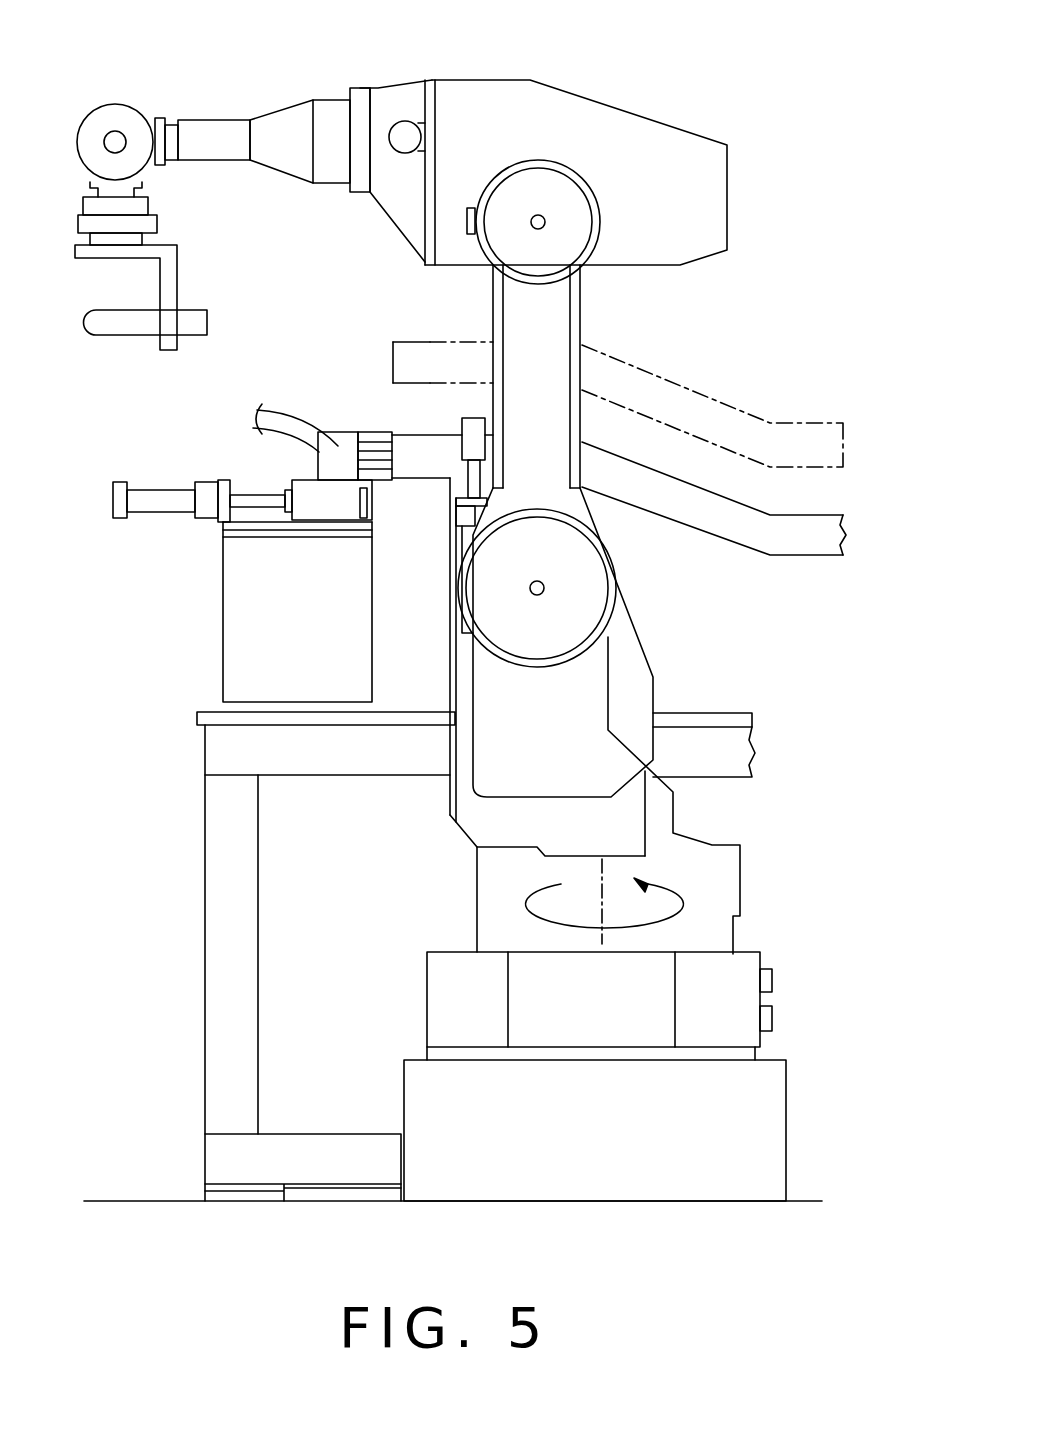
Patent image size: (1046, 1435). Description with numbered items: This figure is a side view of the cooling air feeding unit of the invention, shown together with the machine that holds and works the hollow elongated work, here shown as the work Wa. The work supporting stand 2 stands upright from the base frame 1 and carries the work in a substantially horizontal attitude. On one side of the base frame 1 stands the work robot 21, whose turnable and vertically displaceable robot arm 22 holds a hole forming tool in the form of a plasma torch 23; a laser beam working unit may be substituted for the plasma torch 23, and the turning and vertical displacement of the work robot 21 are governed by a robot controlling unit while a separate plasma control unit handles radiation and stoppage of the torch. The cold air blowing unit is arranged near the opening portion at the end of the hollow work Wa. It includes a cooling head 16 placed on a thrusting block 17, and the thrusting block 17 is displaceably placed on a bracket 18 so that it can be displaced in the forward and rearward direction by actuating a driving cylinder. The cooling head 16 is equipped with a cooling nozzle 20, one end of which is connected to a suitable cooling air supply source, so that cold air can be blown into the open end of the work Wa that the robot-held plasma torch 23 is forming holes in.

The base frame 1 is at (205, 995).
The work supporting stand 2 is at (450, 555).
The cooling head 16 is at (338, 432).
The thrusting block 17 is at (308, 508).
The bracket 18 is at (238, 636).
The cooling nozzle 20 is at (280, 410).
The work robot 21 is at (700, 88).
The robot arm 22 is at (494, 80).
The plasma torch 23 is at (108, 334).
The workpiece Wa is at (393, 344).